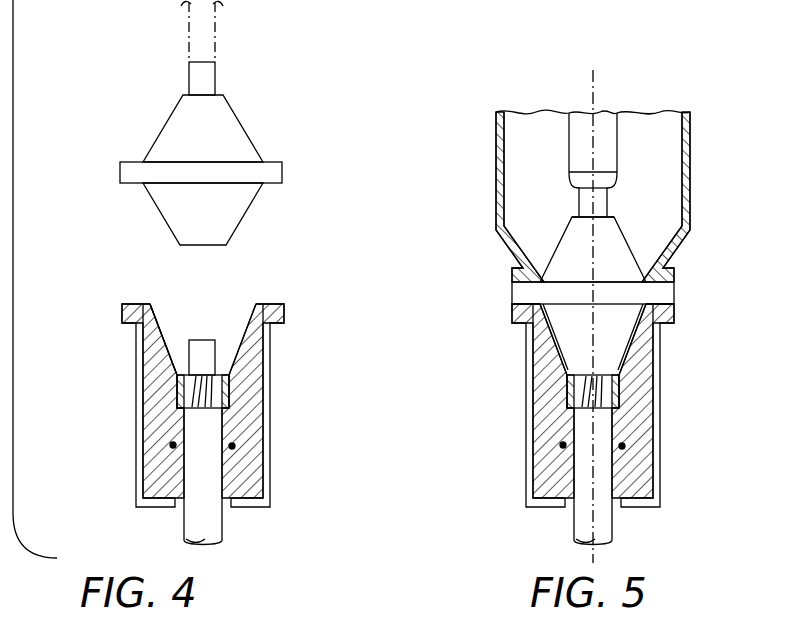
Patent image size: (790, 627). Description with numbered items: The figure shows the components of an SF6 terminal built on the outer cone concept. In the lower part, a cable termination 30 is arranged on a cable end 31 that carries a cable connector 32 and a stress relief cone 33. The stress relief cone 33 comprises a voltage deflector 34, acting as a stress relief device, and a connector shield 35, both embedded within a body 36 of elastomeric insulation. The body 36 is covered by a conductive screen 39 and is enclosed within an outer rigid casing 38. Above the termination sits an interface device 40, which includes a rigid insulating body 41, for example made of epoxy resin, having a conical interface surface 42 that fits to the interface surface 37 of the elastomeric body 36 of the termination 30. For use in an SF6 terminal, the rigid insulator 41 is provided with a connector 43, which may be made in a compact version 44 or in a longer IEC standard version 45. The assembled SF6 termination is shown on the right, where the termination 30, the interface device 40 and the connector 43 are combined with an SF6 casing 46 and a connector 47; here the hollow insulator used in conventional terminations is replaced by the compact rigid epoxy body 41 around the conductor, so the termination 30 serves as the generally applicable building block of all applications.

In FIG. 4, the cable termination 30 is at (238, 413).
In FIG. 4, the cable end 31 is at (222, 530).
In FIG. 4, the cable connector 32 is at (213, 347).
In FIG. 4, the stress relief cone 33 is at (302, 421).
In FIG. 4, the voltage deflector 34 is at (249, 456).
In FIG. 4, the connector shield 35 is at (232, 395).
In FIG. 4, the body of elastomeric insulation 36 is at (243, 352).
In FIG. 4, the interface surface 37 is at (172, 336).
In FIG. 4, the outer rigid casing 38 is at (265, 488).
In FIG. 4, the conductive screen 39 is at (268, 418).
In FIG. 4, the interface device 40 is at (177, 170).
In FIG. 4, the rigid insulating body 41 is at (230, 133).
In FIG. 4, the conical interface surface 42 is at (243, 217).
In FIG. 4, the connector 43 is at (190, 48).
In FIG. 4, the compact version 44 is at (216, 80).
In FIG. 4, the IEC 859 standard version 45 is at (216, 32).
In FIG. 5, the SF6 casing 46 is at (690, 178).
In FIG. 5, the connector 47 is at (605, 118).